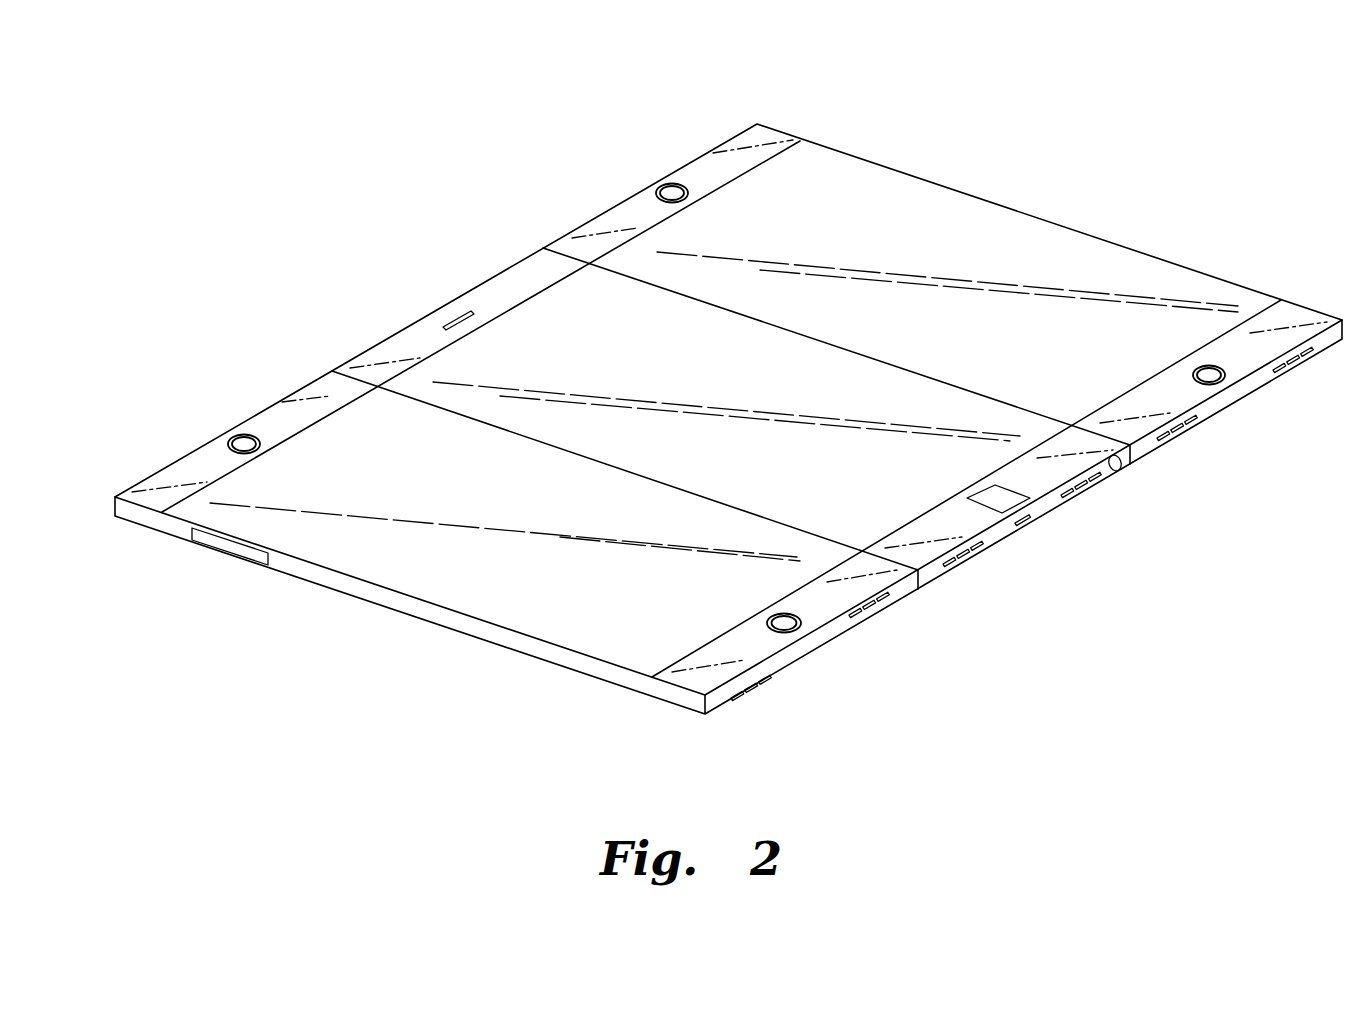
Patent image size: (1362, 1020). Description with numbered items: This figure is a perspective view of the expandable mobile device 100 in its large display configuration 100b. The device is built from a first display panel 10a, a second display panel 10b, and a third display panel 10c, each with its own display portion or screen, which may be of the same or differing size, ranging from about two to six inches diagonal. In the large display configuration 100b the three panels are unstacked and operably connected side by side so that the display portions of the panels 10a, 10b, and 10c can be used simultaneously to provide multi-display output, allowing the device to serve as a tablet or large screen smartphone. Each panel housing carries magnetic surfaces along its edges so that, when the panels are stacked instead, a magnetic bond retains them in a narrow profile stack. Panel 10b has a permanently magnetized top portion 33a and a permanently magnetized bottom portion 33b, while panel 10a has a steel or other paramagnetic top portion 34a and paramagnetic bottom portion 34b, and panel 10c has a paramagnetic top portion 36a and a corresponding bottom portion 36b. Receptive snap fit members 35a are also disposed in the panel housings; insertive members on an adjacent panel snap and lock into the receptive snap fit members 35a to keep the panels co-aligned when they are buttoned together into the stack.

The large display configuration 100b is at (226, 102).
The expandable mobile device 100 is at (582, 224).
The first display panel 10a is at (628, 346).
The second display panel 10b is at (418, 468).
The third display panel 10c is at (860, 225).
The permanently magnetized top portion 33a is at (275, 420).
The permanently magnetized bottom portion 33b is at (812, 605).
The paramagnetic top portion 34a is at (420, 340).
The paramagnetic bottom portion 34b is at (1033, 488).
The receptive snap fit members 35a is at (672, 190).
The paramagnetic top portion 36a is at (700, 170).
The paramagnetic bottom portion 36b is at (1248, 353).